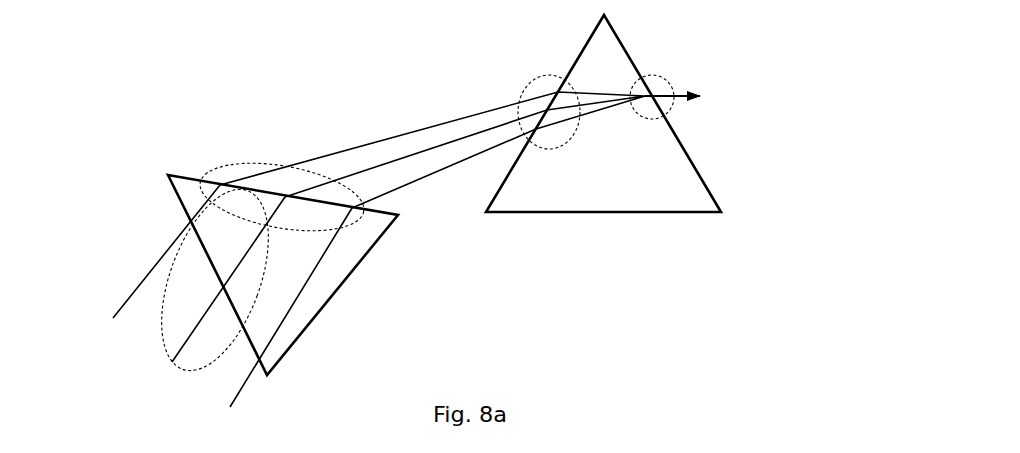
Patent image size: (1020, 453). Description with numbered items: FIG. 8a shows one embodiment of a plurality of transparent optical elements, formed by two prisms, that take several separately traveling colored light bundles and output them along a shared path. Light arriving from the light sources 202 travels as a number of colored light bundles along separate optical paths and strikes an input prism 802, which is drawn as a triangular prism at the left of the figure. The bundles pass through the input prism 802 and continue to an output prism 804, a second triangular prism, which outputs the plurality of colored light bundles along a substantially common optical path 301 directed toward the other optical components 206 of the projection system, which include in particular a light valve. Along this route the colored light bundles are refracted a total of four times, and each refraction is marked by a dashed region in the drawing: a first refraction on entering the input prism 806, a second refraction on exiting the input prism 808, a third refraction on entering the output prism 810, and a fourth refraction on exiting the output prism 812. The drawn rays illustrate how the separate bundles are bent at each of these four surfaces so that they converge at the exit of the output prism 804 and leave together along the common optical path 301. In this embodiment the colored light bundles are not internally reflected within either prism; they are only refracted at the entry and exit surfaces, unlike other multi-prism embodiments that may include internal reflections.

The input prism 802 is at (333, 297).
The output prism 804 is at (623, 213).
The refraction entering the input prism 806 is at (160, 213).
The refraction exiting the input prism 808 is at (240, 167).
The refraction entering the output prism 810 is at (541, 76).
The refraction exiting the output prism 812 is at (647, 76).
The substantially common optical path 301 is at (683, 97).
The light sources 202 is at (205, 307).
The other optical components 206 is at (754, 92).